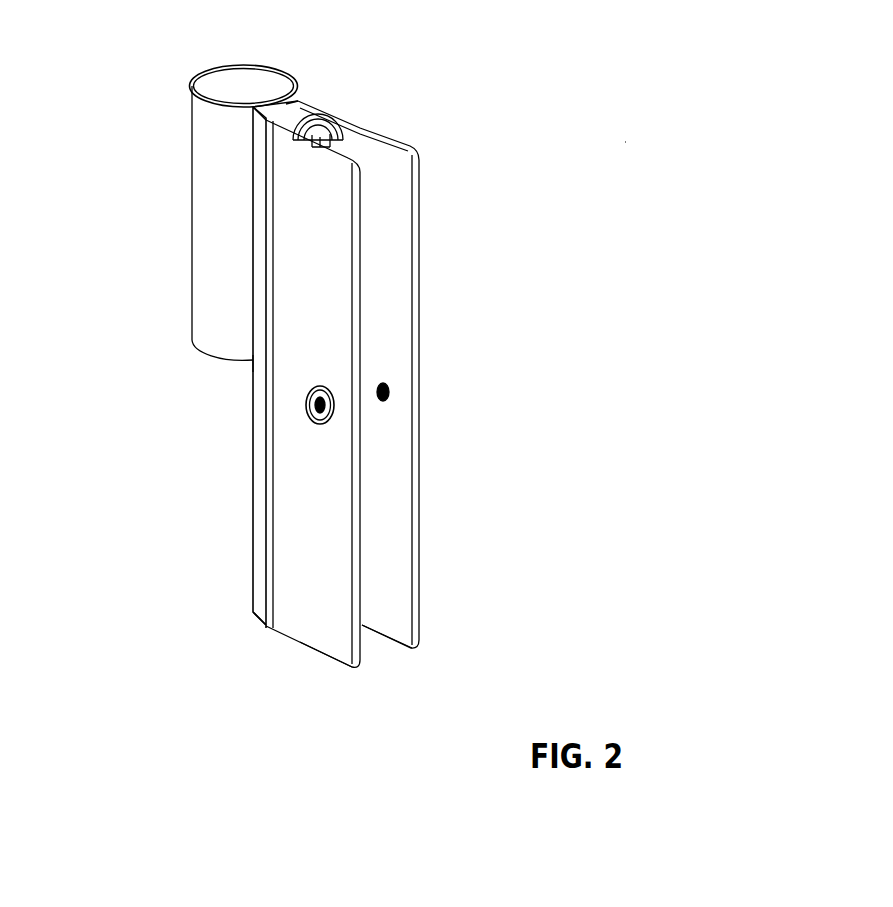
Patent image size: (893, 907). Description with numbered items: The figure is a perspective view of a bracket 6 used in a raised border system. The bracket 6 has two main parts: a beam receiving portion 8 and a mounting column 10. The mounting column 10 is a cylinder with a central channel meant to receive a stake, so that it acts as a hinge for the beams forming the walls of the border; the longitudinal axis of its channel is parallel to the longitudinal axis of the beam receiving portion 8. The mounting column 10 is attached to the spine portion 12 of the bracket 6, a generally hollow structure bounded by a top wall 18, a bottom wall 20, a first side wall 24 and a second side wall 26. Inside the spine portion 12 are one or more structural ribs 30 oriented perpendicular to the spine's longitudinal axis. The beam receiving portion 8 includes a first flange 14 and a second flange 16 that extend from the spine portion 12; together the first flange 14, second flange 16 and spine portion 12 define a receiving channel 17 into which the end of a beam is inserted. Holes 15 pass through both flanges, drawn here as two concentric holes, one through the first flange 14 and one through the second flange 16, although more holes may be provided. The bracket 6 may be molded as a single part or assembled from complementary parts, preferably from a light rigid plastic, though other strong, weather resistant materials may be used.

The bracket 6 is at (634, 130).
The beam receiving portion 8 is at (346, 692).
The mounting column 10 is at (150, 240).
The spine portion 12 is at (245, 380).
The first flange 14 is at (404, 242).
The holes 15 is at (330, 405).
The second flange 16 is at (330, 242).
The receiving channel 17 is at (404, 506).
The top wall 18 is at (292, 108).
The bottom wall 20 is at (248, 634).
The first side wall 24 is at (258, 541).
The second side wall 26 is at (342, 88).
The structural ribs 30 is at (330, 128).